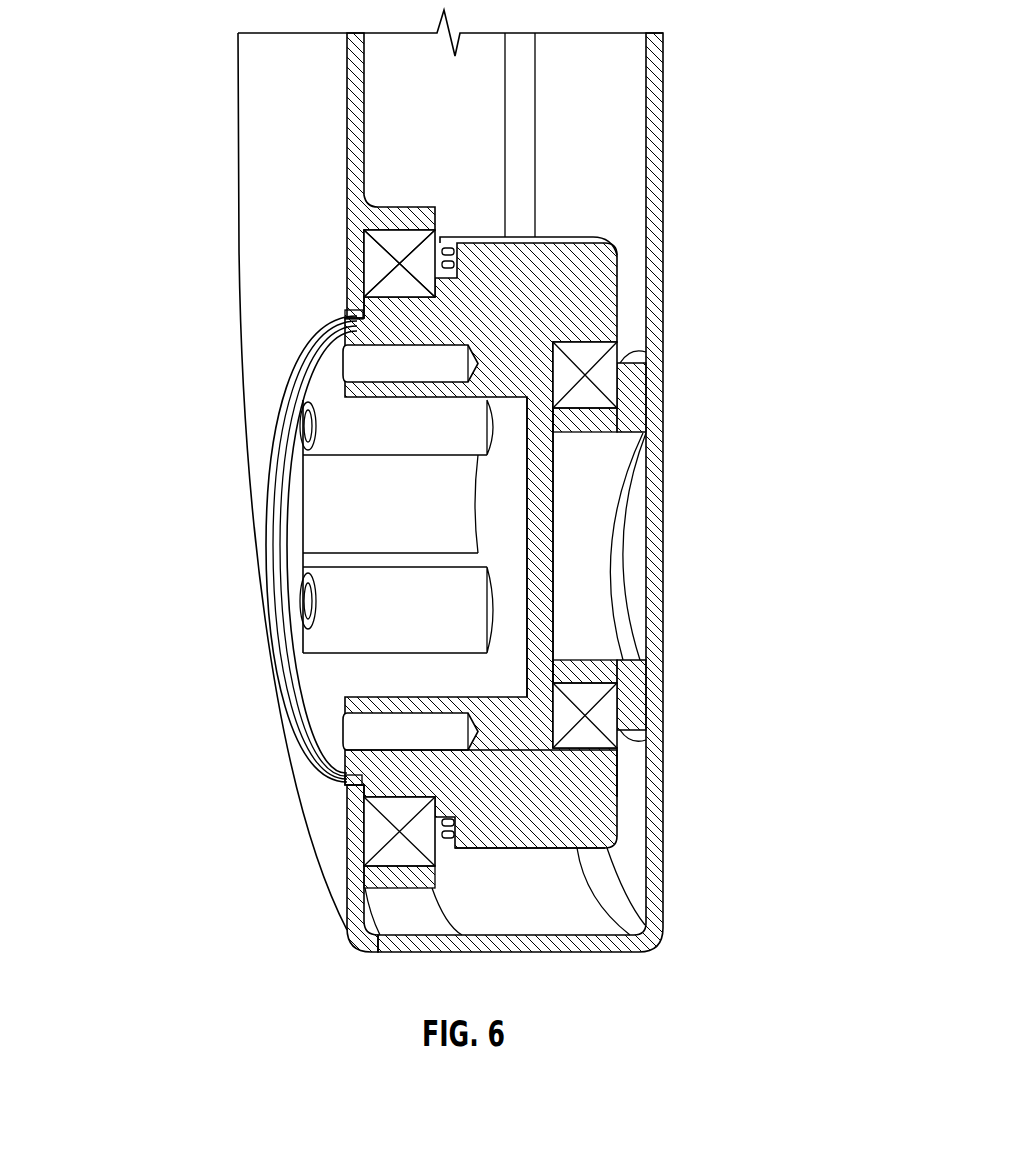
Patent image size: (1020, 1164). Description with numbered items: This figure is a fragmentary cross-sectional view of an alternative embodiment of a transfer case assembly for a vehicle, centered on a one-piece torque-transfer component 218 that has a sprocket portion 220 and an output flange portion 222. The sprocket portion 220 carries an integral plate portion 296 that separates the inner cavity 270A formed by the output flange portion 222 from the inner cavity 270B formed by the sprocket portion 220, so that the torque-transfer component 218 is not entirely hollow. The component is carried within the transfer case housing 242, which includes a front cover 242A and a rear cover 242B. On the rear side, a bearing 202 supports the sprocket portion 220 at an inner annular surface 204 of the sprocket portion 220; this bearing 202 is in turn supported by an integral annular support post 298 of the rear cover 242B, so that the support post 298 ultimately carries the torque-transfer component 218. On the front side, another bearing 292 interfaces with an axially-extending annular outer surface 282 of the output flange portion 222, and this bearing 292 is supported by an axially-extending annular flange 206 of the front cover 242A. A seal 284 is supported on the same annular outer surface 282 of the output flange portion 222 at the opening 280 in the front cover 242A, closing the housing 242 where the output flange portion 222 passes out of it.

The bearing 202 is at (597, 712).
The inner annular surface 204 is at (587, 350).
The axially-extending annular flange 206 is at (373, 214).
The torque-transfer component 218 is at (530, 850).
The sprocket portion 220 is at (583, 323).
The output flange portion 222 is at (410, 777).
The transfer case housing 242 is at (350, 137).
The front cover 242A is at (350, 137).
The rear cover 242B is at (650, 110).
The inner cavity 270A is at (360, 495).
The inner cavity 270B is at (577, 567).
The opening 280 is at (318, 336).
The axially-extending annular outer surface 282 is at (413, 802).
The seal 284 is at (325, 356).
The bearing 292 is at (400, 258).
The integral plate portion 296 is at (540, 510).
The integral annular support post 298 is at (612, 418).